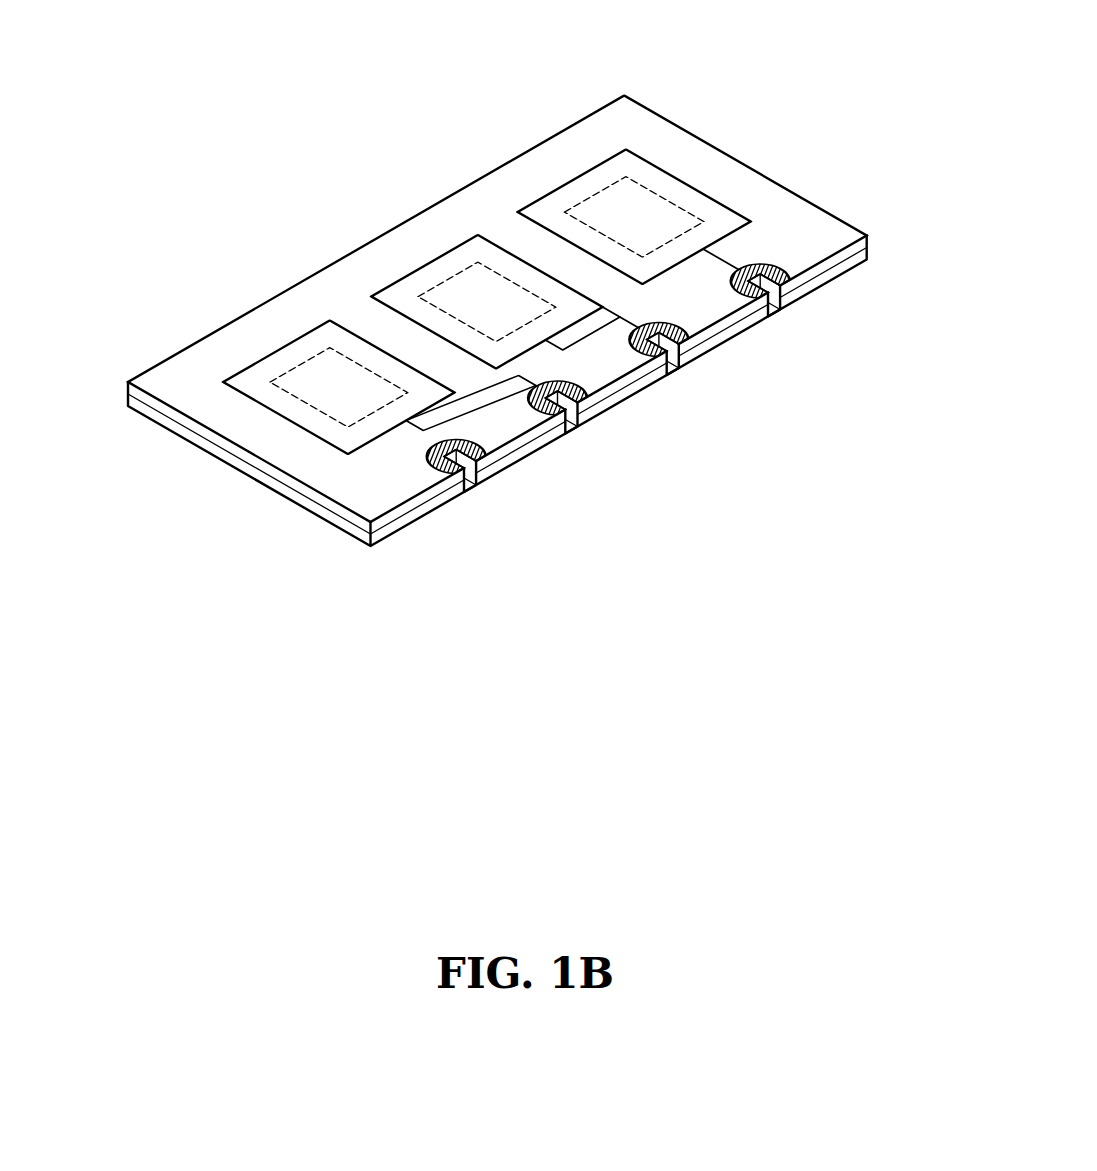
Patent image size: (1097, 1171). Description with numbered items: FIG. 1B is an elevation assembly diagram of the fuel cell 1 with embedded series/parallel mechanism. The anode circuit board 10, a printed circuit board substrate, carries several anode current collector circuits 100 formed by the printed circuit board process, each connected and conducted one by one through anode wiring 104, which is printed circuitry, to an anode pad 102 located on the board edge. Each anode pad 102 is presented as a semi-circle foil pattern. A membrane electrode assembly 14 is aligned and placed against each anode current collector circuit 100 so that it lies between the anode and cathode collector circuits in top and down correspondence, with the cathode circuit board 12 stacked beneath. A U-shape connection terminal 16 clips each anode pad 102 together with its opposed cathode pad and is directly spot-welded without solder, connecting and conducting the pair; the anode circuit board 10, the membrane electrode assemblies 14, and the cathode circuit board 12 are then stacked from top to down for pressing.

The fuel cell 1 is at (221, 138).
The anode circuit board 10 is at (857, 240).
The cathode circuit board 12 is at (835, 272).
The membrane electrode assembly 14 is at (643, 208).
The U-shape connection terminal 16 is at (773, 305).
The anode current collector circuit 100 is at (280, 362).
The anode pad 102 is at (782, 278).
The anode wiring 104 is at (752, 248).